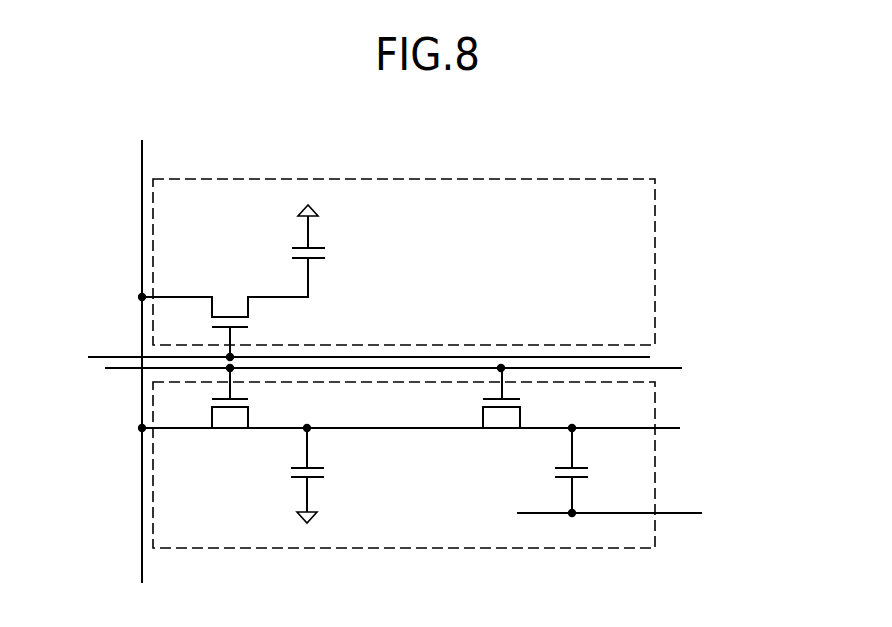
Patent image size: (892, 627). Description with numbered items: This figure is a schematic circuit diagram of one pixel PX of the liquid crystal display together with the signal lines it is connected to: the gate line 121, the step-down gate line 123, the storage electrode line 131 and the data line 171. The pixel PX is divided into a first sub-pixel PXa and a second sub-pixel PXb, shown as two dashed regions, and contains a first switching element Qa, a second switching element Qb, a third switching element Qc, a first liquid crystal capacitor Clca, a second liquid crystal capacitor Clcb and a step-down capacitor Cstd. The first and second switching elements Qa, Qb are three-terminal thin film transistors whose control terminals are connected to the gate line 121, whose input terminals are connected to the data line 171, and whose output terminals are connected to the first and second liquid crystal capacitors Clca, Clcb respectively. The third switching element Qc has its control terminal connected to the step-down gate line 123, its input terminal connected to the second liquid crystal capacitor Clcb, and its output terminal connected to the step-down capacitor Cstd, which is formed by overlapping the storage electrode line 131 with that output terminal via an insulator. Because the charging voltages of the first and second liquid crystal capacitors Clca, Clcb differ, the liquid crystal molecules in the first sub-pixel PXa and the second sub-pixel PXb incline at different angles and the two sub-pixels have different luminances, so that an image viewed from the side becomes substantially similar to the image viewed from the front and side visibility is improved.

The data line 171 is at (142, 237).
The gate line 121 is at (351, 357).
The step-down gate line 123 is at (411, 370).
The storage electrode line 131 is at (627, 514).
The first sub-pixel PXa is at (655, 262).
The second sub-pixel PXb is at (655, 455).
The pixel PX is at (758, 253).
The first switching element Qa is at (224, 307).
The second switching element Qb is at (410, 410).
The third switching element Qc is at (501, 410).
The first liquid crystal capacitor Clca is at (332, 237).
The second liquid crystal capacitor Clcb is at (331, 474).
The step-down capacitor Cstd is at (597, 469).